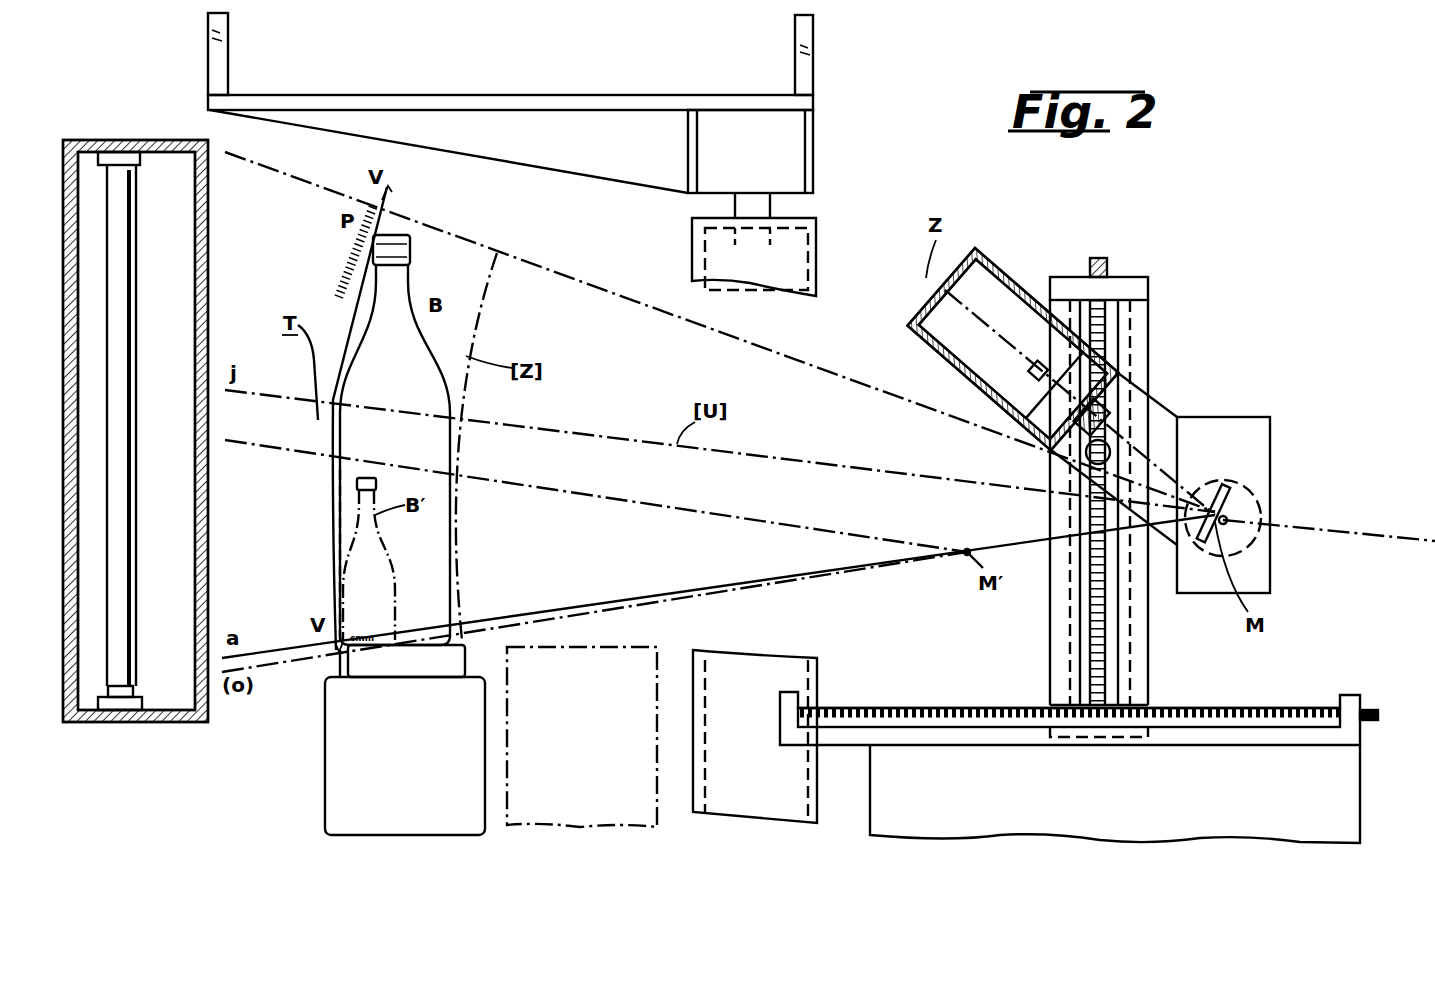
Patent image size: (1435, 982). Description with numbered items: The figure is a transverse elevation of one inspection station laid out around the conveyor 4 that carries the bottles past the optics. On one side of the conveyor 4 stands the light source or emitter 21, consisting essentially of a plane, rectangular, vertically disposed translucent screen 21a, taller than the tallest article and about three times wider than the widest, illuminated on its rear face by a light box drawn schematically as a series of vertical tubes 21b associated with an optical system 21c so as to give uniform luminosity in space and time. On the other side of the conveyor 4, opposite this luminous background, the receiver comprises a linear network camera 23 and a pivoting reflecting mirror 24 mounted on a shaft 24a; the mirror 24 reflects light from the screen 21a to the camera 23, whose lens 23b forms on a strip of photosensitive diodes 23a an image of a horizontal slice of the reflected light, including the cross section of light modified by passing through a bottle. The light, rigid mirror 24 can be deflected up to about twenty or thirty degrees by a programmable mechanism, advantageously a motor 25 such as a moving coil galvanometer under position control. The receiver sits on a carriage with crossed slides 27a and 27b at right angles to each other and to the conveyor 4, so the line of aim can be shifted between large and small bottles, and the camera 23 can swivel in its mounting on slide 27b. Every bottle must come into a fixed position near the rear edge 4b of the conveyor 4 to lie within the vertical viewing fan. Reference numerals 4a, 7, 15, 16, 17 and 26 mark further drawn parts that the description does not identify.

The conveyor 4 is at (335, 795).
The support plate 4a is at (442, 665).
The rear edge of the conveyor 4b is at (357, 655).
The conveyor element 7 is at (622, 820).
The overhead carrier beam 15 is at (565, 98).
The sensor unit 16 is at (795, 262).
The machine base 17 is at (1340, 810).
The light source or emitter 21 is at (168, 392).
The screen 21a is at (205, 232).
The vertical tubes 21b is at (118, 585).
The optical system 21c is at (82, 287).
The linear network camera 23 is at (1069, 331).
The strip of photodetectors 23a is at (1038, 371).
The lens 23b is at (1092, 417).
The pivoting reflecting mirror 24 is at (1259, 501).
The shaft 24a is at (1228, 524).
The motor 25 is at (1255, 495).
The pivot bearing 26 is at (1052, 448).
The slide 27a is at (870, 708).
The slide 27b is at (1100, 655).